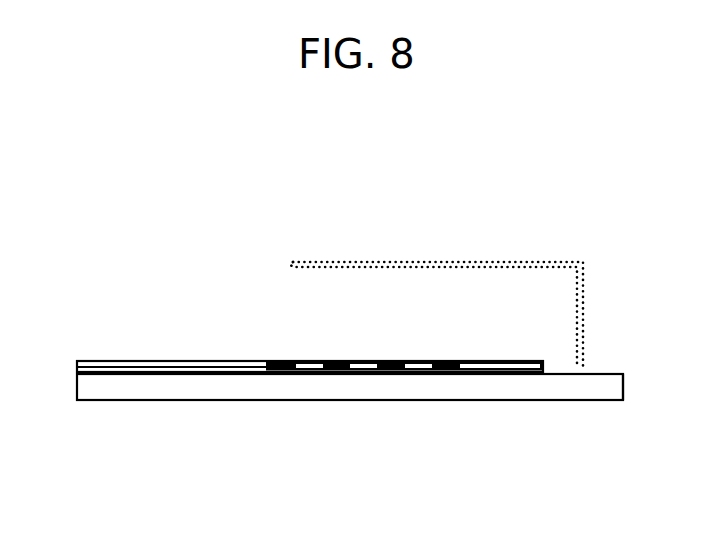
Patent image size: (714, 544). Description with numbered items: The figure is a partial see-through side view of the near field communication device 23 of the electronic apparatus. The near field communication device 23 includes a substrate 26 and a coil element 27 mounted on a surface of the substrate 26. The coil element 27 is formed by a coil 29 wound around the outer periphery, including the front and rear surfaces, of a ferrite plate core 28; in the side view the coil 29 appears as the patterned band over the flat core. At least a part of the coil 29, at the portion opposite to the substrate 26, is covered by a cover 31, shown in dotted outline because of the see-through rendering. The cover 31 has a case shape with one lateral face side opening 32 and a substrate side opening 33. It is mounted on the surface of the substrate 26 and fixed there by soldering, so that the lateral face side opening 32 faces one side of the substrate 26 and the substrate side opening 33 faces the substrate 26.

The near field communication device 23 is at (223, 390).
The substrate 26 is at (610, 386).
The coil element 27 is at (87, 363).
The ferrite plate core 28 is at (526, 360).
The coil 29 is at (284, 360).
The cover 31 is at (513, 262).
The lateral face side opening 32 is at (325, 287).
The substrate side opening 33 is at (562, 364).